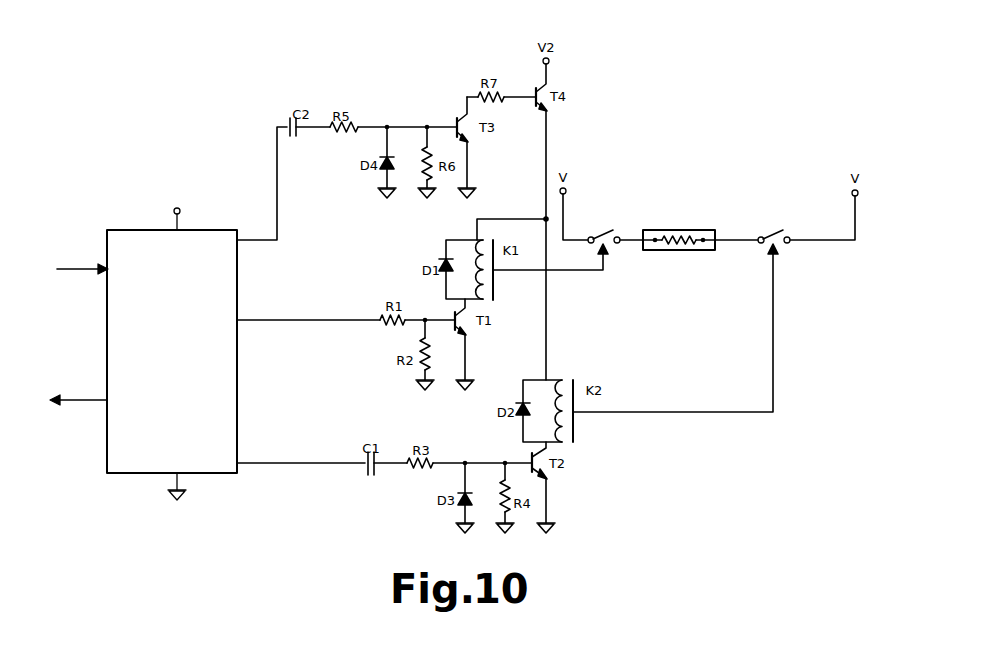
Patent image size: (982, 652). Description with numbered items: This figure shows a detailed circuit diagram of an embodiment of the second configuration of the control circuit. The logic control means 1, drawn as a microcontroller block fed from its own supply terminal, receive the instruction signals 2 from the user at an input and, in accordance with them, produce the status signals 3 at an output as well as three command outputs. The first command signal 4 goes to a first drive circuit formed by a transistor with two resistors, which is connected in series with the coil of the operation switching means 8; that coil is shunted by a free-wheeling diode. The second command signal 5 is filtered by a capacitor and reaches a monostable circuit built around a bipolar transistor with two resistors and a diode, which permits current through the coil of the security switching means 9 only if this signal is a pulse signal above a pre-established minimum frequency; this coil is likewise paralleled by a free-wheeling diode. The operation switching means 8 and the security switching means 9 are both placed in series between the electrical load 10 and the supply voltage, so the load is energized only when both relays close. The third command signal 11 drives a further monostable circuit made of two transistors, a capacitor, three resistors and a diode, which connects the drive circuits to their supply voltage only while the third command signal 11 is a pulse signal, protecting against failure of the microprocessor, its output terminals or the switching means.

The logic control means 1 is at (172, 345).
The instruction signals 2 is at (78, 259).
The status signals 3 is at (89, 390).
The first command signal 4 is at (258, 308).
The second command signal 5 is at (267, 455).
The operation switching means 8 is at (604, 227).
The security switching means 9 is at (774, 227).
The electrical load 10 is at (679, 230).
The third command signal 11 is at (247, 230).